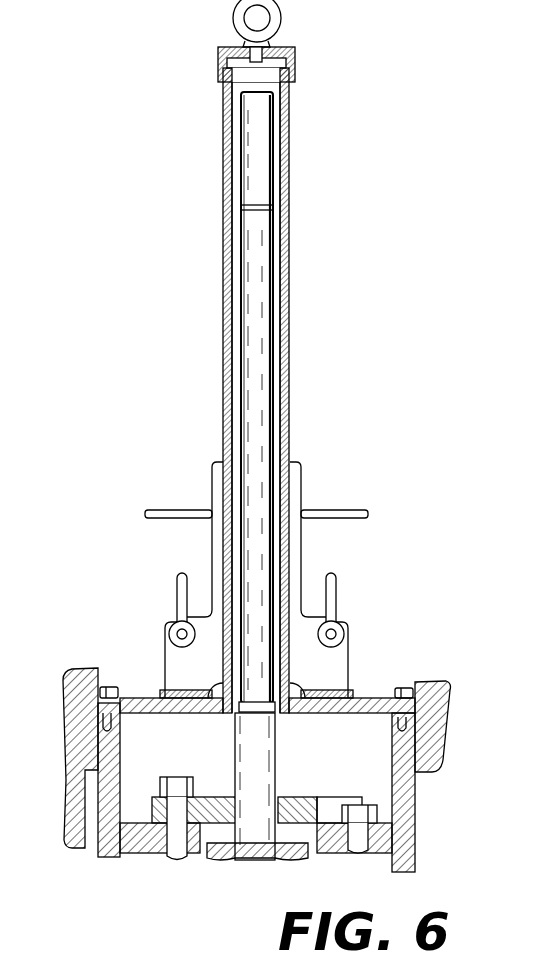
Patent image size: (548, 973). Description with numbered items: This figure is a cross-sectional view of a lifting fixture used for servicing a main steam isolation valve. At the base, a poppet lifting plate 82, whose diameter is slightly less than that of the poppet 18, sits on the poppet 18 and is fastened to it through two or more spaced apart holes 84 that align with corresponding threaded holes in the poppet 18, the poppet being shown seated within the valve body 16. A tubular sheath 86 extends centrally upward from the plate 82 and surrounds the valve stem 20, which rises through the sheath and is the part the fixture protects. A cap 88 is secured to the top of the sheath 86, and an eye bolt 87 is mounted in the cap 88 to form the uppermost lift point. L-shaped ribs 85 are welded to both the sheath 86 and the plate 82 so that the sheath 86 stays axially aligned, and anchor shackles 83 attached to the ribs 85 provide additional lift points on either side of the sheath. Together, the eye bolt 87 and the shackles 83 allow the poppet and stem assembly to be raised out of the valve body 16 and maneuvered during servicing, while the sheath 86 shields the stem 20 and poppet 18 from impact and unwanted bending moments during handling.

The eye bolt 87 is at (282, 22).
The cap 88 is at (295, 73).
The tubular sheath 86 is at (290, 327).
The L-shaped ribs 85 is at (302, 485).
The anchor shackles 83 is at (177, 592).
The poppet lifting plate 82 is at (370, 698).
The holes 84 is at (100, 706).
The valve body 16 is at (450, 716).
The poppet 18 is at (415, 820).
The shaft 20 is at (275, 762).